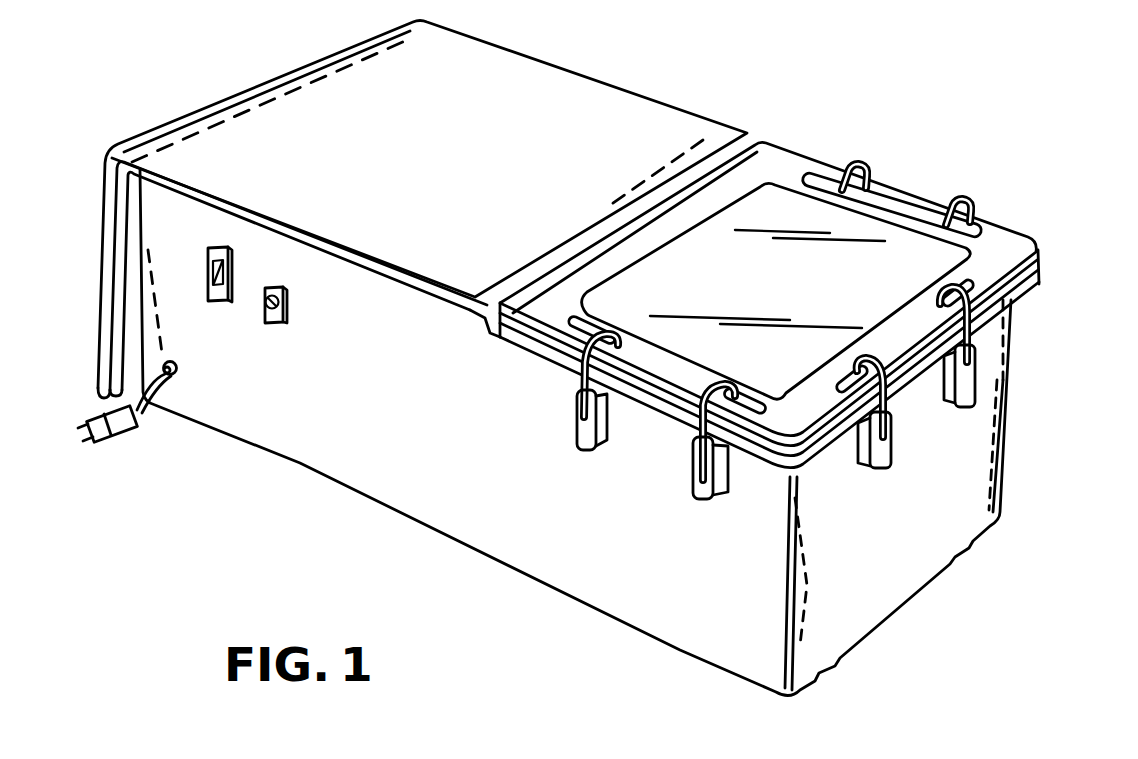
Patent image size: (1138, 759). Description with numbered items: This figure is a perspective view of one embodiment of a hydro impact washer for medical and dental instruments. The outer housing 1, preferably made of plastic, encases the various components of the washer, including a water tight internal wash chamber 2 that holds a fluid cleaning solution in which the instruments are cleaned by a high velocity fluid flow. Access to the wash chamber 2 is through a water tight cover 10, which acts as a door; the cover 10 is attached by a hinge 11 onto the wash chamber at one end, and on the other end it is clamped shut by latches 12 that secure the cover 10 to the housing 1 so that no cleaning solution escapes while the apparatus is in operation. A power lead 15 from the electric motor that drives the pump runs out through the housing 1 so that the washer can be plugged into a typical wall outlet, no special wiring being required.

The housing 1 is at (220, 122).
The internal wash chamber 2 is at (1033, 281).
The cover 10 is at (1013, 250).
The hinge 11 is at (753, 141).
The latches 12 is at (963, 407).
The power lead 15 is at (123, 430).